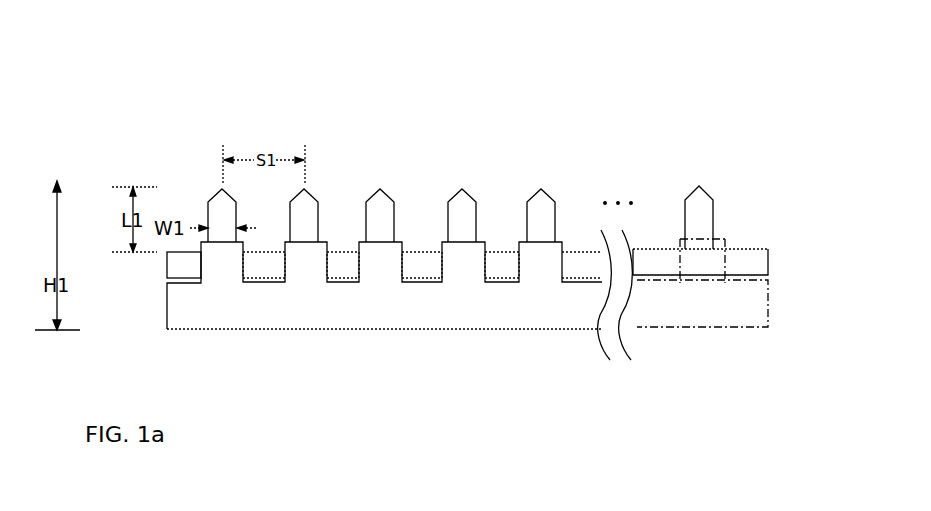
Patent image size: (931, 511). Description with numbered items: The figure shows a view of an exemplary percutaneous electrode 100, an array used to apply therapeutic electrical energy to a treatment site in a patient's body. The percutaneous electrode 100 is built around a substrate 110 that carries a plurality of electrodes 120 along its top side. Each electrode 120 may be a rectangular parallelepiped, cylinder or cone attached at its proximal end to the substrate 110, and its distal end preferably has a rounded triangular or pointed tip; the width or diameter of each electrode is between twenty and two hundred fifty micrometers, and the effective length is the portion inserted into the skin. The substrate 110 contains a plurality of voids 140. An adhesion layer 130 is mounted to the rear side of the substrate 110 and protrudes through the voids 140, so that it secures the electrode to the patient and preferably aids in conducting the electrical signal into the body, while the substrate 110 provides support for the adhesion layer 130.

The percutaneous electrode 100 is at (278, 107).
The substrate 110 is at (768, 258).
The electrodes 120 is at (713, 210).
The adhesion layer 130 is at (166, 312).
The voids 140 is at (490, 248).